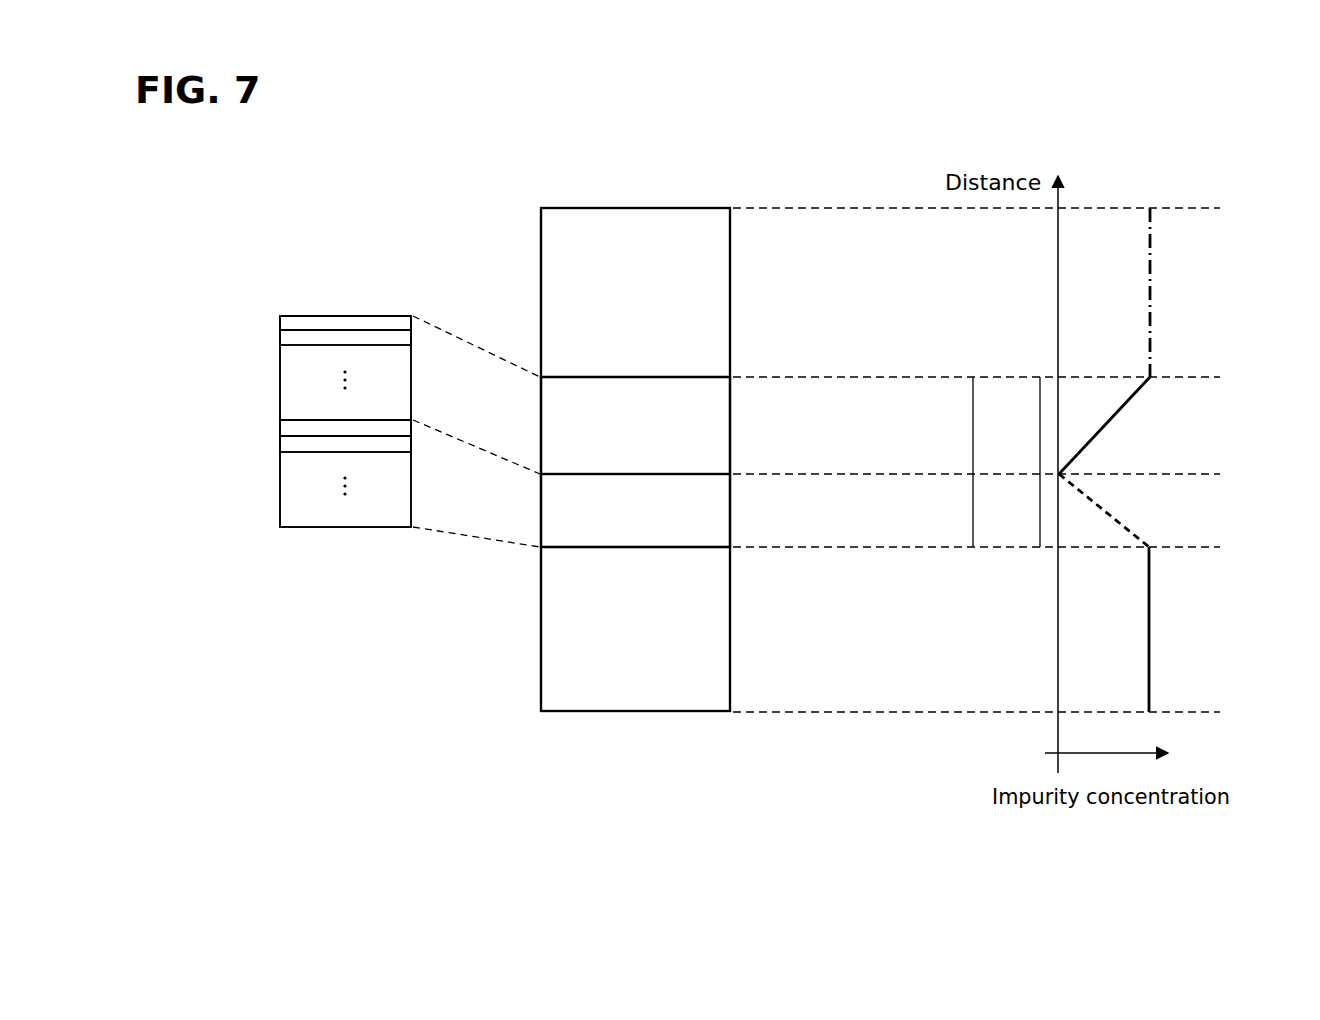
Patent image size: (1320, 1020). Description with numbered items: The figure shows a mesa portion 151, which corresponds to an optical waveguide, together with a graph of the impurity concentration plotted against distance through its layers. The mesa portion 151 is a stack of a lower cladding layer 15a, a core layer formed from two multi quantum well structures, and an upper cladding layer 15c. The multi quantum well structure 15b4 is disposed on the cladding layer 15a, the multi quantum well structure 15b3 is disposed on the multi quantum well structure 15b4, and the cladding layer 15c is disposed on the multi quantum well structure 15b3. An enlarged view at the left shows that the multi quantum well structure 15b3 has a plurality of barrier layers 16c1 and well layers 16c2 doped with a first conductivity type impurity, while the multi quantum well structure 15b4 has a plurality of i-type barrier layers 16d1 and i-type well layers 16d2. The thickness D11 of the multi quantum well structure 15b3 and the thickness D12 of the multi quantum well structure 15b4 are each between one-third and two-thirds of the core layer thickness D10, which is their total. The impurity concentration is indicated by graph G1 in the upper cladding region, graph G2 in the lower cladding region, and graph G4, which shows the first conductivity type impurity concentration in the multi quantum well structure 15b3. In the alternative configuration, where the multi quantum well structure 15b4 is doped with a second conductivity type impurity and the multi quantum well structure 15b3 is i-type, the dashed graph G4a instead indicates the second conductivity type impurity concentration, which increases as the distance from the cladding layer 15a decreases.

The mesa portion 151 is at (608, 190).
The cladding layer 15c is at (548, 288).
The cladding layer 15a is at (550, 649).
The multi quantum well (MQW) structure 15b3 is at (712, 410).
The multi quantum well (MQW) structure 15b4 is at (712, 498).
The barrier layers 16c1 is at (286, 322).
The well layers 16c2 is at (284, 338).
The i-type barrier layers 16d1 is at (286, 428).
The i-type well layers 16d2 is at (286, 445).
The graph G1 is at (1152, 283).
The graph G2 is at (1152, 633).
The graph G4 is at (1110, 420).
The graph G4a is at (1115, 517).
The thickness D10 is at (973, 380).
The thickness D11 is at (1040, 380).
The thickness D12 is at (1040, 477).